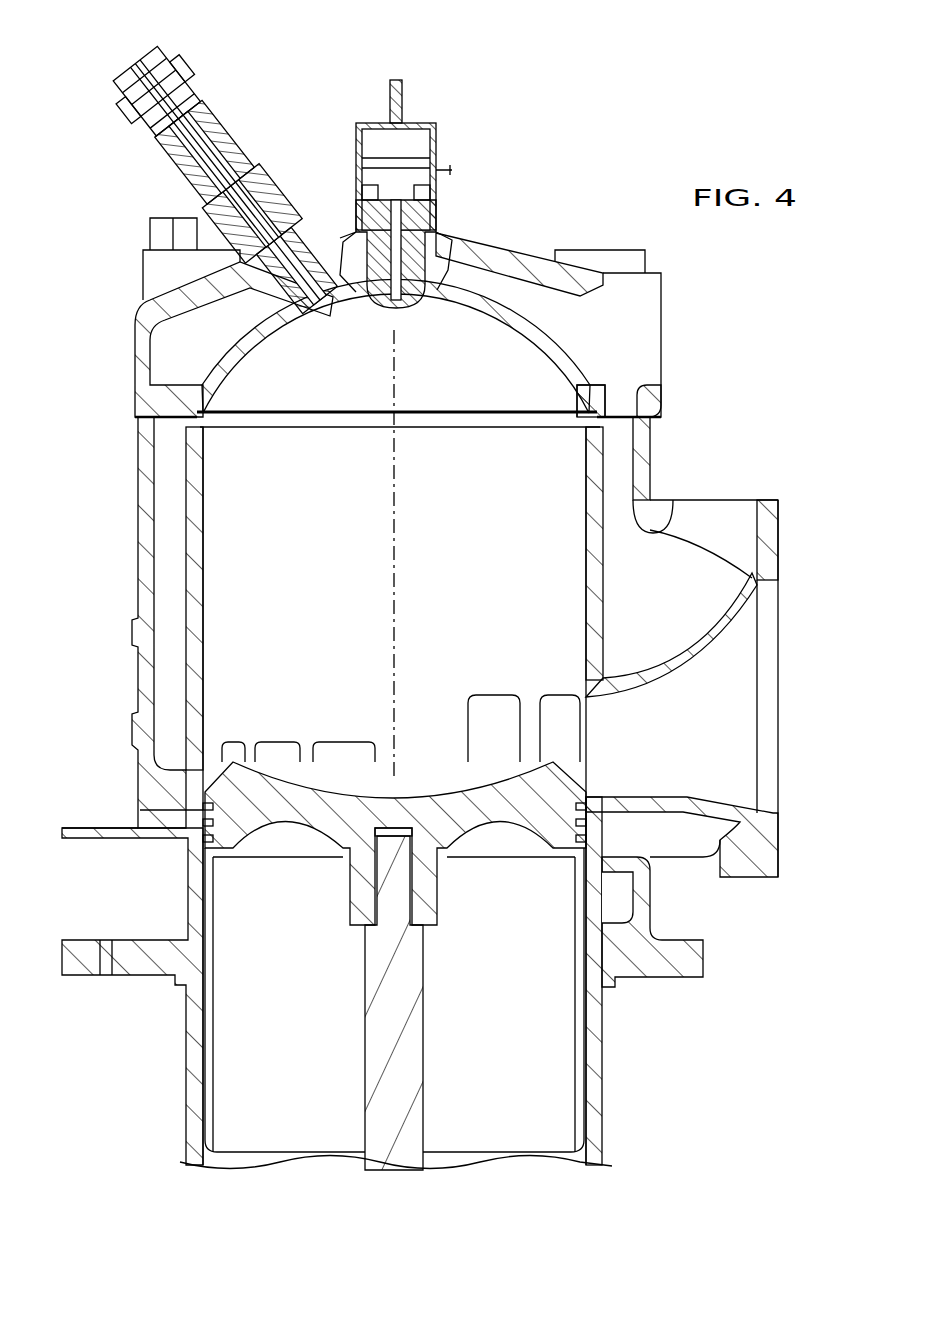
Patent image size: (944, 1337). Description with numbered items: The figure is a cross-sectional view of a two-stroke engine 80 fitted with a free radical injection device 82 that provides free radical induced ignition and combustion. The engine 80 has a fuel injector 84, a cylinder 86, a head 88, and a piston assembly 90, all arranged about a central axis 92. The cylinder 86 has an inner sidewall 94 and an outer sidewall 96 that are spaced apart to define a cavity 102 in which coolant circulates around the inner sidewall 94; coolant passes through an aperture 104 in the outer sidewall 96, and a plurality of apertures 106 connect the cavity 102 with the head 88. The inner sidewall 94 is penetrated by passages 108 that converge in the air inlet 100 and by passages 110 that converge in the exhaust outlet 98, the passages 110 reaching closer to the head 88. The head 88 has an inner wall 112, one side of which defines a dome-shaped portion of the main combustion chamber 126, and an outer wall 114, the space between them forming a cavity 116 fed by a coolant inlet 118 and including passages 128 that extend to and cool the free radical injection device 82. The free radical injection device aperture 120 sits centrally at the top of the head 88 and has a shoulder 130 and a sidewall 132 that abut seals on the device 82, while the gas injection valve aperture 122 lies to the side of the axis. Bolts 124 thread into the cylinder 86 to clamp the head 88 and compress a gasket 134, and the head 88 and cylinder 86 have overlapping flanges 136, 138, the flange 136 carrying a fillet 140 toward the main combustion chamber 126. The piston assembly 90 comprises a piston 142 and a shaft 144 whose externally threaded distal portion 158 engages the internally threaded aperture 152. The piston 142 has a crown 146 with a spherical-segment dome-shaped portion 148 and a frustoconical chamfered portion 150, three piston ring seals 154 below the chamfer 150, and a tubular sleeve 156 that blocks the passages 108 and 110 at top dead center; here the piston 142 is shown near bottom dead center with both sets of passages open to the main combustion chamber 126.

The two-stroke engine 80 is at (567, 100).
The free radical injection device 82 is at (441, 209).
The fuel injector 84 is at (241, 136).
The cylinder 86 is at (136, 566).
The head 88 is at (125, 350).
The piston assembly 90 is at (344, 951).
The central axis 92 is at (398, 585).
The inner sidewall 94 is at (196, 590).
The outer sidewall 96 is at (142, 530).
The exhaust outlet 98 is at (762, 745).
The air inlet 100 is at (90, 965).
The cavity 102 is at (172, 535).
The aperture 104 is at (138, 675).
The apertures 106 is at (165, 440).
The passages 108 is at (216, 742).
The passages 110 is at (490, 705).
The inner wall 112 is at (525, 332).
The outer wall 114 is at (490, 252).
The cavity 116 is at (540, 288).
The coolant inlet 118 is at (655, 322).
The free radical injection device aperture 120 is at (455, 302).
The gas injection valve aperture 122 is at (327, 306).
The bolts 124 is at (170, 228).
The main combustion chamber 126 is at (473, 480).
The passages 128 is at (358, 256).
The shoulder 130 is at (392, 313).
The sidewall 132 is at (356, 232).
The gasket 134 is at (650, 432).
The flange 136 is at (222, 425).
The flange 138 is at (190, 410).
The fillet 140 is at (460, 420).
The piston 142 is at (440, 915).
The shaft 144 is at (423, 1060).
The crown 146 is at (388, 756).
The dome-shaped portion 148 is at (450, 770).
The chamfered portion 150 is at (580, 758).
The aperture 152 is at (405, 935).
The seals 154 is at (222, 862).
The sleeve 156 is at (213, 1055).
The distal portion 158 is at (418, 880).